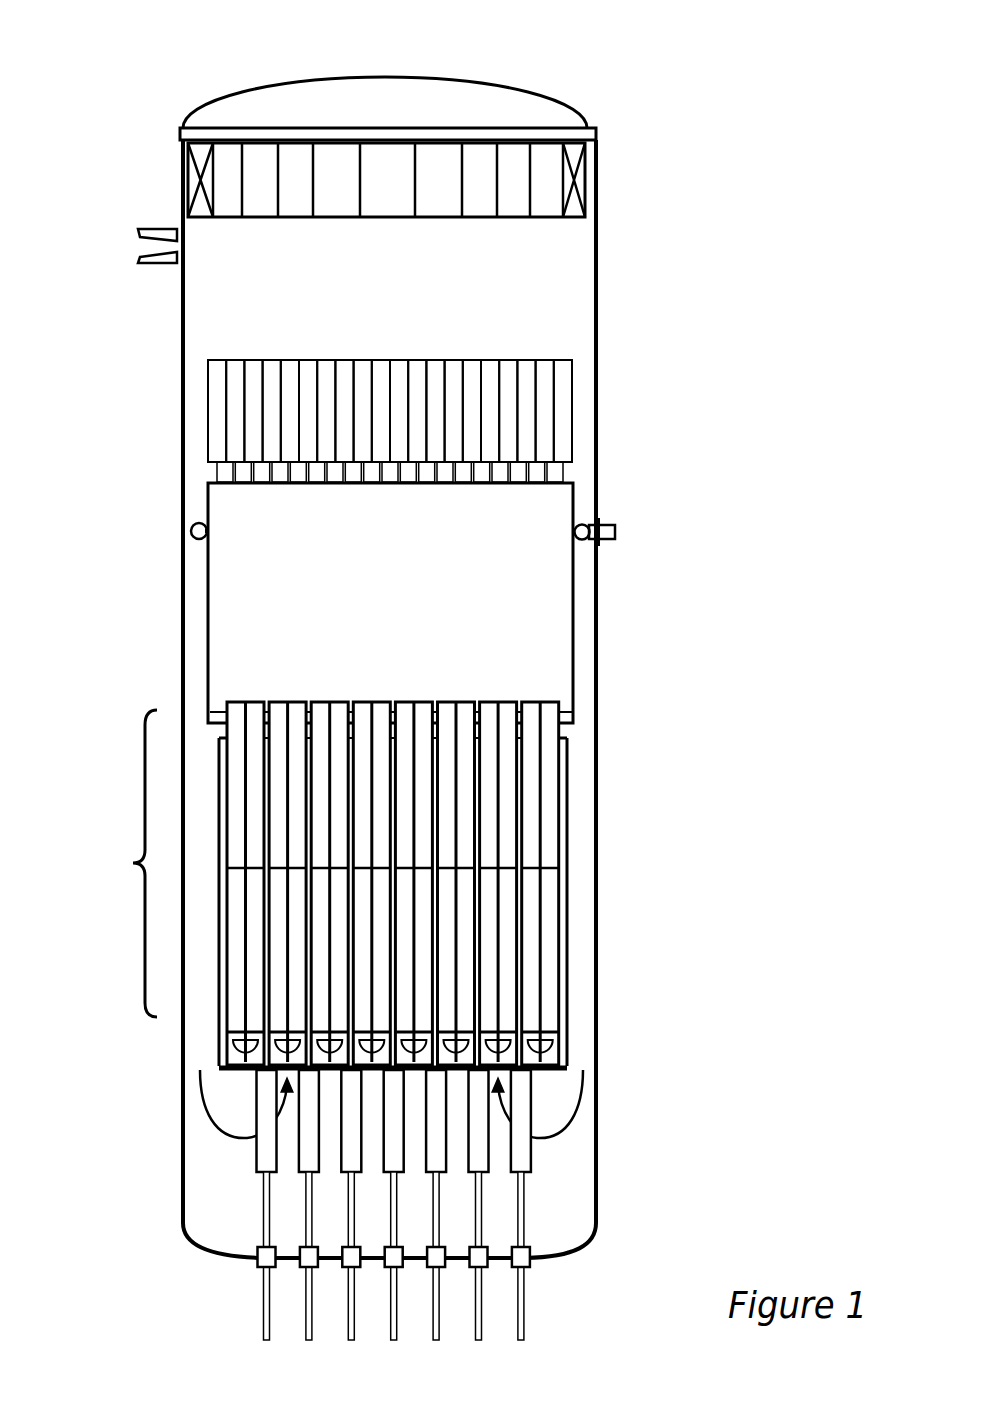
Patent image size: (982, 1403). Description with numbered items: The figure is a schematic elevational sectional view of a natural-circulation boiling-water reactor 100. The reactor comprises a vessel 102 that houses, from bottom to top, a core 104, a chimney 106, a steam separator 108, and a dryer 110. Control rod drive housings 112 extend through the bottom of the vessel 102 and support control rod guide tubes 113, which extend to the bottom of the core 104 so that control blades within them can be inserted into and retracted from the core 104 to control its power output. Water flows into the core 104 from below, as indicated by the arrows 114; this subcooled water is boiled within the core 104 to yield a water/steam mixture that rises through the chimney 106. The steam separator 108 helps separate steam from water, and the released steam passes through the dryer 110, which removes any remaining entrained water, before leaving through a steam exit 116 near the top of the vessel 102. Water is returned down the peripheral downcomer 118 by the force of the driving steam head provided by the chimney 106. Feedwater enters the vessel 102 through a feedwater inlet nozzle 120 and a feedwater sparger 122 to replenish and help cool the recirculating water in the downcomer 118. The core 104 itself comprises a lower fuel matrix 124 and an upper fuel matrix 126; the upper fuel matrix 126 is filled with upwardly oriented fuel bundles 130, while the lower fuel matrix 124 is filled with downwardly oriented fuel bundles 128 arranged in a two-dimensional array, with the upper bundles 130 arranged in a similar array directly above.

The natural-circulation boiling-water reactor 100 is at (118, 72).
The vessel 102 is at (597, 400).
The core 104 is at (123, 863).
The chimney 106 is at (575, 598).
The steam separator 108 is at (208, 390).
The dryer 110 is at (573, 222).
The control rod drive housings 112 is at (532, 1177).
The control rod guide tubes 113 is at (256, 1157).
The arrows 114 is at (250, 1137).
The steam exit 116 is at (147, 263).
The peripheral downcomer 118 is at (578, 866).
The feedwater inlet nozzle 120 is at (598, 523).
The feedwater sparger 122 is at (190, 531).
The lower fuel matrix 124 is at (558, 947).
The upper fuel matrix 126 is at (558, 793).
The downwardly oriented fuel bundles 128 is at (490, 990).
The upwardly oriented fuel bundles 130 is at (403, 708).